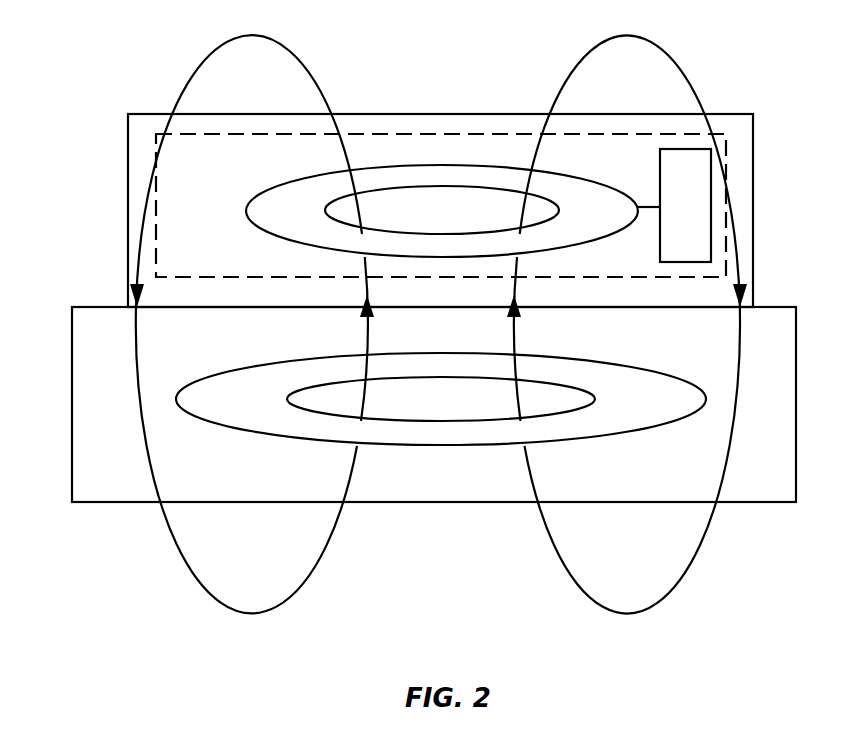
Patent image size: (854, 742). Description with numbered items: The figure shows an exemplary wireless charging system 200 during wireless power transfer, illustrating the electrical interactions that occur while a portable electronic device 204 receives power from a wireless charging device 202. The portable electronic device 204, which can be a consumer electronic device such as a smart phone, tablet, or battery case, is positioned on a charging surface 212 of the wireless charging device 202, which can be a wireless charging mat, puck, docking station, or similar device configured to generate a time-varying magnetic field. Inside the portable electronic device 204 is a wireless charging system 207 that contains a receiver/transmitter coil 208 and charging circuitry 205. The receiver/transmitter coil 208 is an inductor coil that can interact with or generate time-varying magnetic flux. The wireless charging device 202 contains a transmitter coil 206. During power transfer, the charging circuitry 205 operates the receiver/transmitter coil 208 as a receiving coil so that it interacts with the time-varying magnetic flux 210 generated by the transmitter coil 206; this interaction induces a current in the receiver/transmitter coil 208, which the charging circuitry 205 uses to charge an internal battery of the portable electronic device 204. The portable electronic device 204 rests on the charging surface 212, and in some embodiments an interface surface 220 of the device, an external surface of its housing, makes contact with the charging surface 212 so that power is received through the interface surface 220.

The wireless charging system 200 is at (120, 82).
The wireless charging device 202 is at (732, 502).
The portable electronic device 204 is at (477, 114).
The charging circuitry 205 is at (712, 217).
The transmitter coil 206 is at (460, 445).
The wireless charging system 207 is at (392, 133).
The receiver/transmitter coil 208 is at (247, 207).
The time-varying magnetic flux 210 is at (330, 545).
The charging surface 212 is at (95, 307).
The interface surface 220 is at (750, 297).